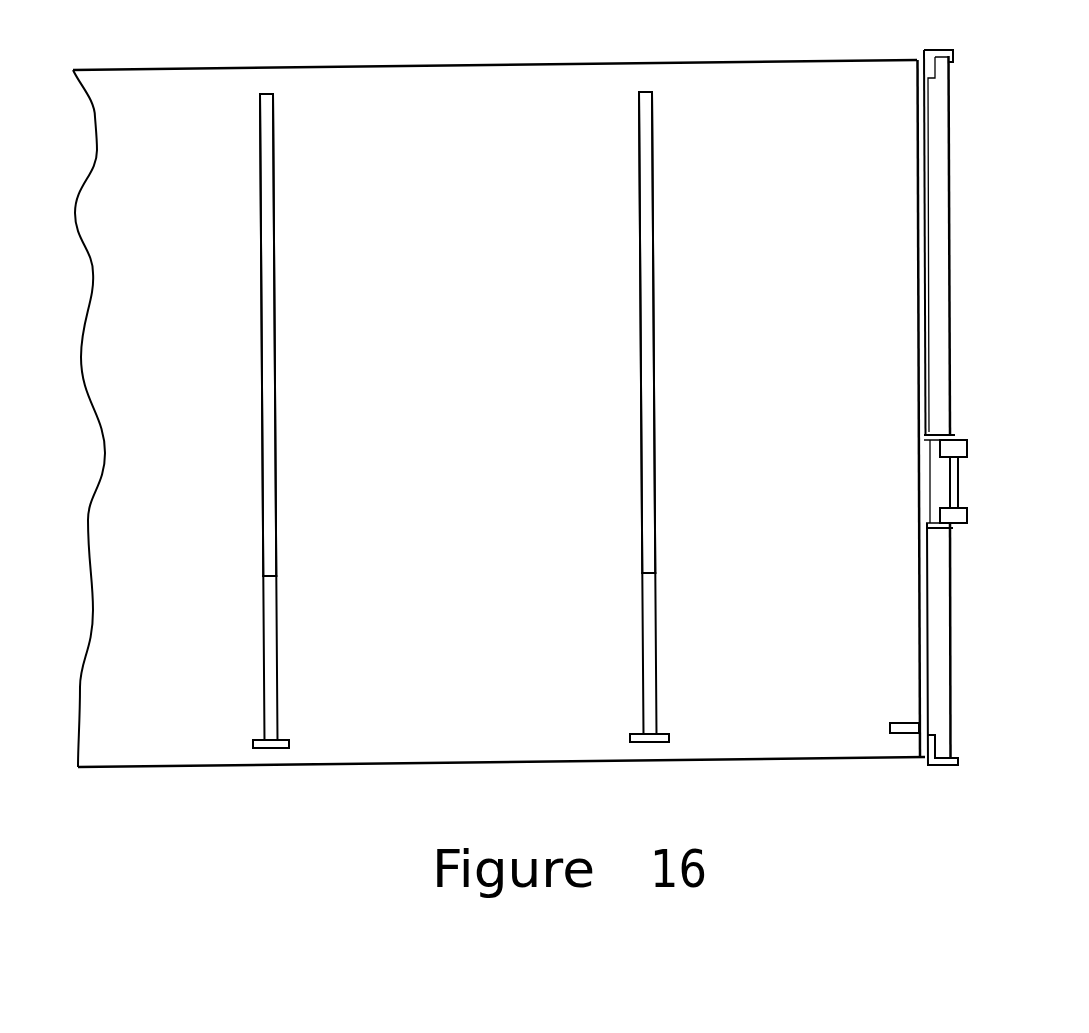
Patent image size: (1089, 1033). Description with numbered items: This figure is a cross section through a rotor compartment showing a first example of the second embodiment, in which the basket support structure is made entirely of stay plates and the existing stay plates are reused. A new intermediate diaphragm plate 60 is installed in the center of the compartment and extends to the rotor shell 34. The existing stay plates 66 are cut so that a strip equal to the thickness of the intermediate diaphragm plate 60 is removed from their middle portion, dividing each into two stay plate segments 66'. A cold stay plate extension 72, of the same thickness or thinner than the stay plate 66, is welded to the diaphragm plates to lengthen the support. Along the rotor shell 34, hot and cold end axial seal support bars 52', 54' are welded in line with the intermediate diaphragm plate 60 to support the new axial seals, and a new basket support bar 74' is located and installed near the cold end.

The intermediate diaphragm plate 60 is at (502, 64).
The stay plate 66 is at (497, 334).
The stay plate segment 66' is at (396, 334).
The cold stay plate extension 72 is at (278, 620).
The rotor shell 34 is at (917, 234).
The hot end axial seal support bar 52' is at (983, 286).
The cold end axial seal support bar 54' is at (984, 644).
The basket support bar 74' is at (877, 697).